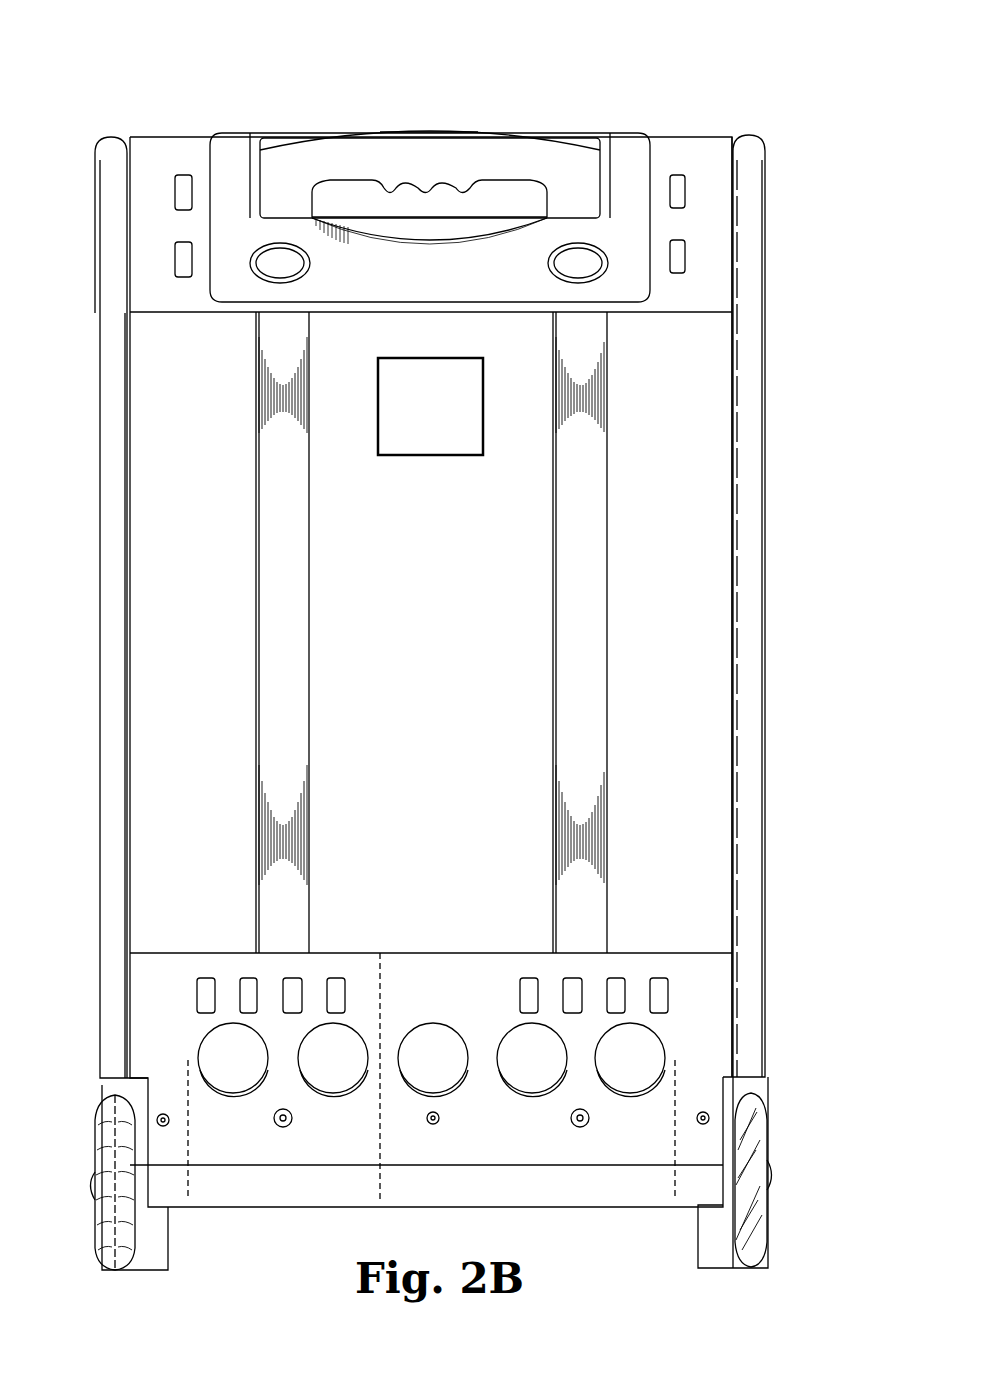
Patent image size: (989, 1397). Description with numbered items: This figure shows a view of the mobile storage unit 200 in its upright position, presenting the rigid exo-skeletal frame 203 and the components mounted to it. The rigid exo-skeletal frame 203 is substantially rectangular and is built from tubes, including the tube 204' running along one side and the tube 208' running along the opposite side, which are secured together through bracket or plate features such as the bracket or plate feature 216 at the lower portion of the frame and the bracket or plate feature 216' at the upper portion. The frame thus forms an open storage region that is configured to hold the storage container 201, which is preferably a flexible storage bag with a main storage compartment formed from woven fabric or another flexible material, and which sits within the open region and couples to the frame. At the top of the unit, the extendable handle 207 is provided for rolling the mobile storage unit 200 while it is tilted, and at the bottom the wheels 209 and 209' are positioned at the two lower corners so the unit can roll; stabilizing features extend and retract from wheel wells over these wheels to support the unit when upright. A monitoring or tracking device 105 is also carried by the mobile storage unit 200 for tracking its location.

The mobile storage unit 200 is at (118, 62).
The storage container 201 is at (447, 555).
The monitoring or tracking device 105 is at (452, 421).
The rigid exo-skeletal frame 203 is at (768, 483).
The tube 204' is at (83, 607).
The extendable handle 207 is at (510, 155).
The tube 208' is at (790, 606).
The wheel 209 is at (93, 1177).
The wheel 209' is at (777, 1172).
The bracket or plate feature 216 is at (433, 1108).
The bracket or plate feature 216' is at (453, 185).